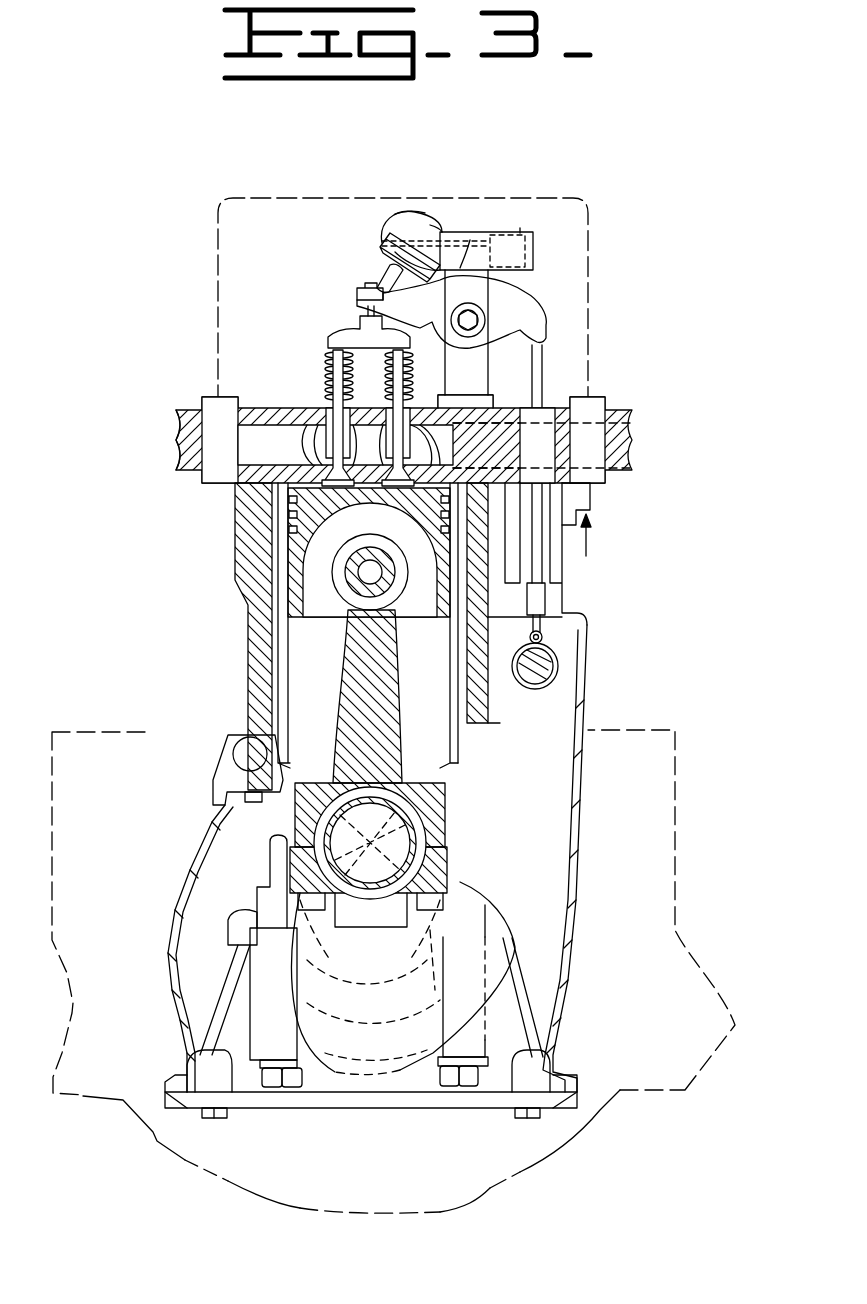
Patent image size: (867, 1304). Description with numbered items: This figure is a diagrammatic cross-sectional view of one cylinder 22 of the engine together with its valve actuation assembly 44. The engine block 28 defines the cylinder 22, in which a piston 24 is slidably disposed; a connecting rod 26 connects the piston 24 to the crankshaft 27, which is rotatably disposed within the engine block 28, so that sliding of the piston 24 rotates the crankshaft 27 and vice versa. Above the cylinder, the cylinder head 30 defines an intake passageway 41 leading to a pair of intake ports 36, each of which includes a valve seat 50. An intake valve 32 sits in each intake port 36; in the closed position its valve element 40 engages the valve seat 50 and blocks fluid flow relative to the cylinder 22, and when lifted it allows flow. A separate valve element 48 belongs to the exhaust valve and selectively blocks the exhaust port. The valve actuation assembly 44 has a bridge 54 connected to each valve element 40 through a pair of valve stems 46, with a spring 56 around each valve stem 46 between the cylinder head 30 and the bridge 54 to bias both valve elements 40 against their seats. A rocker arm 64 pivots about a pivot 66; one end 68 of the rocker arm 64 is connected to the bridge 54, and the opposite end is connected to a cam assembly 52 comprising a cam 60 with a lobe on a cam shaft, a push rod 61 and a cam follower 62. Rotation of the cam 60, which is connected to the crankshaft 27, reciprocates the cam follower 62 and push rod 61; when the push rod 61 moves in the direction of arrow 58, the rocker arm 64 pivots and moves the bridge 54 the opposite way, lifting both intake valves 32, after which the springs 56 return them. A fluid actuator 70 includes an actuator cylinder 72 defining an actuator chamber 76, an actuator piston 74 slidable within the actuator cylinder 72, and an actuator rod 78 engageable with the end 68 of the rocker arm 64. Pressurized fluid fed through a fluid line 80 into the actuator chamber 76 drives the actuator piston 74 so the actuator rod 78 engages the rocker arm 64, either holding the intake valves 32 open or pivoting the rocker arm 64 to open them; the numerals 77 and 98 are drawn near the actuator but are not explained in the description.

The cylinder 22 is at (297, 648).
The piston 24 is at (262, 602).
The connecting rod 26 is at (362, 718).
The crankshaft 27 is at (468, 900).
The engine block 28 is at (248, 670).
The cylinder head 30 is at (592, 497).
The intake valve 32 is at (350, 452).
The intake port 36 is at (558, 476).
The valve element 40 is at (289, 512).
The intake passageway 41 is at (222, 440).
The valve actuation assembly 44 is at (707, 163).
The valve stem 46 is at (388, 436).
The valve element 48 is at (600, 482).
The valve seat 50 is at (282, 535).
The cam assembly 52 is at (612, 587).
The bridge 54 is at (342, 332).
The spring 56 is at (390, 356).
The arrow 58 is at (592, 540).
The cam 60 is at (514, 665).
The push rod 61 is at (538, 576).
The cam follower 62 is at (545, 638).
The rocker arm 64 is at (546, 326).
The pivot 66 is at (540, 302).
The end of rocker arm 68 is at (362, 302).
The fluid actuator 70 is at (455, 193).
The actuator cylinder 72 is at (384, 245).
The actuator piston 74 is at (395, 213).
The actuator chamber 76 is at (425, 235).
The actuator housing 77 is at (470, 240).
The actuator rod 78 is at (386, 280).
The fluid line 80 is at (538, 240).
The actuator port 98 is at (520, 228).